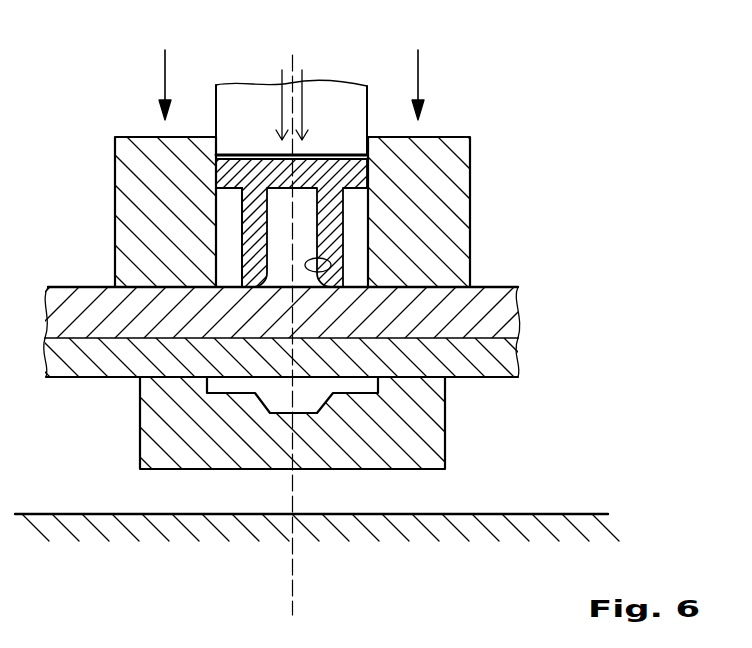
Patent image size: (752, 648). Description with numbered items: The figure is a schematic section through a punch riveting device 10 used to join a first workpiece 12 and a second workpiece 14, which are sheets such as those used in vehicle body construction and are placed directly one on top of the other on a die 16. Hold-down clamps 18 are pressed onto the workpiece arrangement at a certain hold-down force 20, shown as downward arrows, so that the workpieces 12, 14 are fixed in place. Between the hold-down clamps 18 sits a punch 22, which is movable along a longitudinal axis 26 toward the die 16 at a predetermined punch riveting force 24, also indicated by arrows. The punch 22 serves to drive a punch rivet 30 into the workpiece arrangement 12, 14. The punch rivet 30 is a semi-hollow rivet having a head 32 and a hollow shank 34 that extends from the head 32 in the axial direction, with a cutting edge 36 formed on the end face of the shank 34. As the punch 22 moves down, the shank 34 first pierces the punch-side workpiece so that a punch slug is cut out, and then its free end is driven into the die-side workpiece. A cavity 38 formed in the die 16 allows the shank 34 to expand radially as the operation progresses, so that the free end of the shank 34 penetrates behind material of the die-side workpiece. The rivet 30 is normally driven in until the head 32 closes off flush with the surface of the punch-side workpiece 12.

The punch riveting device 10 is at (533, 103).
The first workpiece 12 is at (492, 313).
The second workpiece 14 is at (497, 358).
The die 16 is at (291, 423).
The hold-down clamps 18 is at (443, 180).
The hold-down force 20 is at (163, 77).
The punch 22 is at (338, 100).
The punch riveting force 24 is at (277, 93).
The longitudinal axis 26 is at (292, 586).
The punch rivet 30 is at (293, 223).
The head 32 is at (232, 178).
The hollow shank 34 is at (252, 255).
The cutting edge 36 is at (332, 262).
The cavity 38 is at (222, 385).